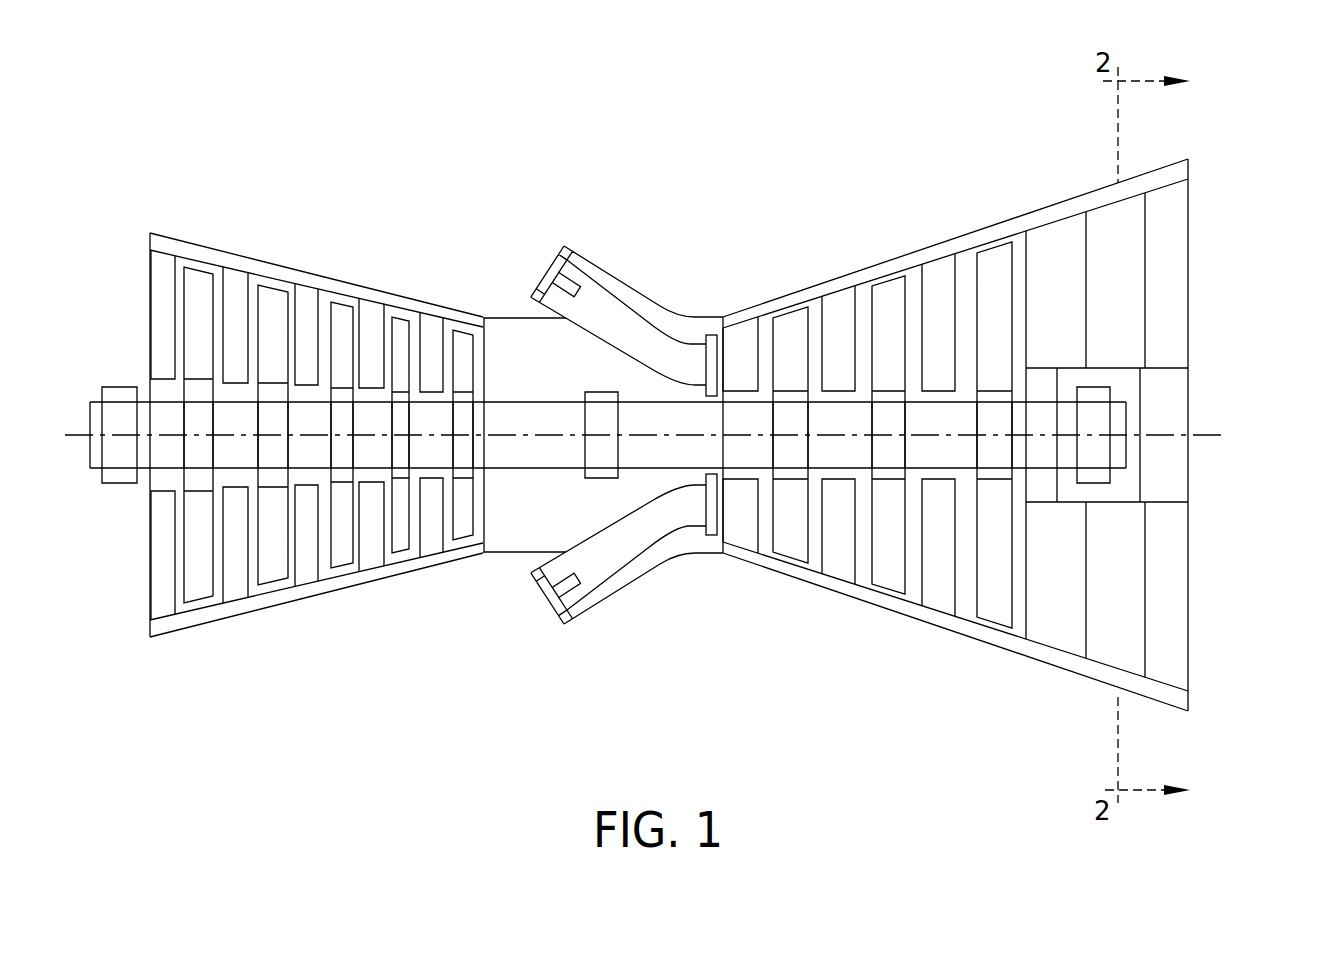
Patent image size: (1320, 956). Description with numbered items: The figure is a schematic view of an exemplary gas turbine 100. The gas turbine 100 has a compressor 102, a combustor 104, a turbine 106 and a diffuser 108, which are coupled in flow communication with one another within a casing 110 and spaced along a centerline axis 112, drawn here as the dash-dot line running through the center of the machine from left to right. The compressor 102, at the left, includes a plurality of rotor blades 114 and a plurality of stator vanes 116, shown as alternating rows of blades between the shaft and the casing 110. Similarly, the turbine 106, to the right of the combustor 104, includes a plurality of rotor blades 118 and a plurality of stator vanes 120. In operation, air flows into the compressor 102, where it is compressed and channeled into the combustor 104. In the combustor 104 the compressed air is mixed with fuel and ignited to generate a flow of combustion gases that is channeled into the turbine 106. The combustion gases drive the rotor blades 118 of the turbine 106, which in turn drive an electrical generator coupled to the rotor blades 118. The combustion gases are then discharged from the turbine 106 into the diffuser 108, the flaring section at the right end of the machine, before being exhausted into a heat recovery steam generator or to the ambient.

The gas turbine 100 is at (688, 383).
The compressor 102 is at (358, 431).
The combustor 104 is at (634, 260).
The turbine 106 is at (955, 428).
The diffuser 108 is at (1182, 142).
The casing 110 is at (320, 595).
The centerline axis 112 is at (1206, 422).
The rotor blades 114 is at (203, 290).
The stator vanes 116 is at (238, 292).
The rotor blades 118 is at (791, 326).
The stator vanes 120 is at (842, 316).